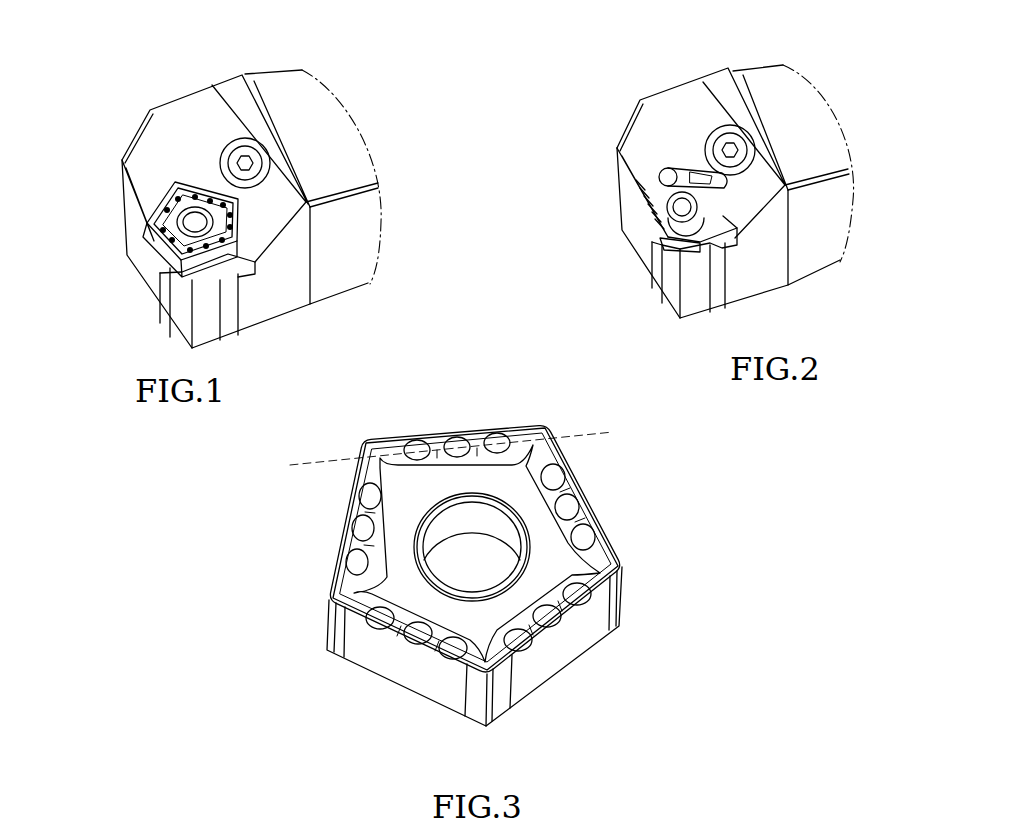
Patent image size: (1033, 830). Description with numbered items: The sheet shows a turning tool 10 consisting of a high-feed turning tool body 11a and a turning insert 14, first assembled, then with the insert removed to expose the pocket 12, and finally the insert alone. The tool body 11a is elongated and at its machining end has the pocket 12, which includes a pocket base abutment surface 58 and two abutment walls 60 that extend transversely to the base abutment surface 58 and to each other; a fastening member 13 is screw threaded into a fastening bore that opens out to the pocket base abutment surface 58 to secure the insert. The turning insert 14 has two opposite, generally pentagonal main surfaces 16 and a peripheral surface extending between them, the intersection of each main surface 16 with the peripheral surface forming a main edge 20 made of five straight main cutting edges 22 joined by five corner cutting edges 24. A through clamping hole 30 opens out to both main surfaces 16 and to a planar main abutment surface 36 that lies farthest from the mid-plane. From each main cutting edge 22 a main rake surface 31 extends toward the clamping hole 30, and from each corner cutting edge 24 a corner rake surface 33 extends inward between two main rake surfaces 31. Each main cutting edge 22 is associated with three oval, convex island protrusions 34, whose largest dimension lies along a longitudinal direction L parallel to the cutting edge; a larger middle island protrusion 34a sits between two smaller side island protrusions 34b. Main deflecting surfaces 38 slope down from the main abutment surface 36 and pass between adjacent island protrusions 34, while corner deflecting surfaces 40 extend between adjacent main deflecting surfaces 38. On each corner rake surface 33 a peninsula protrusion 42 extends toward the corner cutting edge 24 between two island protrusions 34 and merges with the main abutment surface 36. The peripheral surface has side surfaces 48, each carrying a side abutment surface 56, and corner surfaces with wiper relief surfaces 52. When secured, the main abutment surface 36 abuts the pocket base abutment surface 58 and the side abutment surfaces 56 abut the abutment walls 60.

In FIG. 1, the turning tool 10 is at (245, 206).
In FIG. 1, the high-feed turning tool body 11a is at (160, 130).
In FIG. 2, the high-feed turning tool body 11a is at (665, 73).
In FIG. 2, the pocket 12 is at (655, 237).
In FIG. 2, the fastening member 13 is at (688, 190).
In FIG. 1, the turning insert 14 is at (168, 248).
In FIG. 3, the turning insert 14 is at (476, 557).
In FIG. 3, the main surface 16 is at (497, 482).
In FIG. 3, the main edge 20 is at (331, 515).
In FIG. 3, the main cutting edge 22 is at (382, 628).
In FIG. 3, the corner cutting edge 24 is at (546, 420).
In FIG. 3, the clamping hole 30 is at (405, 440).
In FIG. 3, the main rake surface 31 is at (455, 525).
In FIG. 3, the corner rake surface 33 is at (371, 441).
In FIG. 3, the island protrusion 34 is at (575, 490).
In FIG. 3, the middle island protrusion 34a is at (410, 640).
In FIG. 3, the side island protrusion 34b is at (343, 656).
In FIG. 3, the main abutment surface 36 is at (552, 556).
In FIG. 3, the main deflecting surface 38 is at (347, 553).
In FIG. 3, the corner deflecting surface 40 is at (477, 690).
In FIG. 3, the peninsula protrusion 42 is at (593, 557).
In FIG. 3, the side surface 48 is at (594, 628).
In FIG. 3, the wiper relief surface 52 is at (503, 688).
In FIG. 3, the side abutment surface 56 is at (415, 680).
In FIG. 2, the pocket base abutment surface 58 is at (682, 228).
In FIG. 2, the abutment wall 60 is at (662, 172).
In FIG. 3, the longitudinal direction L is at (594, 432).